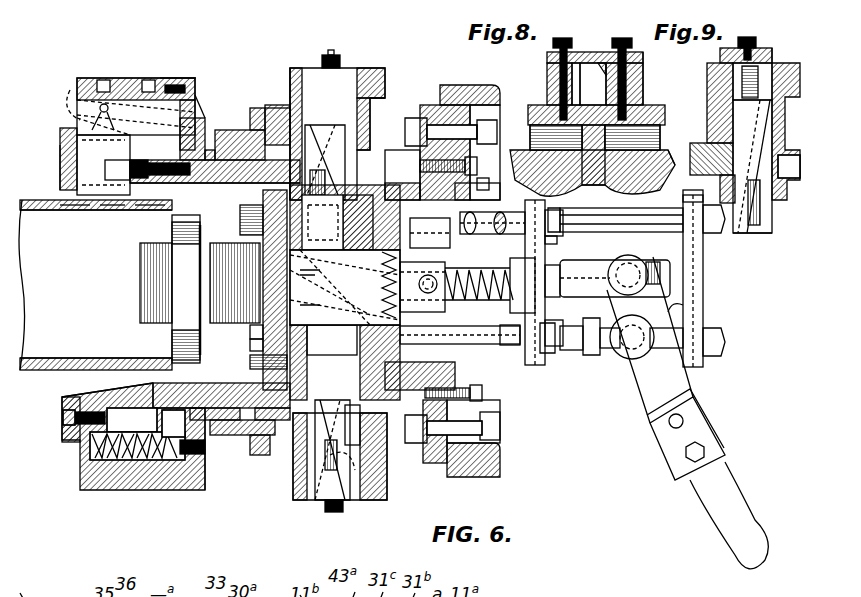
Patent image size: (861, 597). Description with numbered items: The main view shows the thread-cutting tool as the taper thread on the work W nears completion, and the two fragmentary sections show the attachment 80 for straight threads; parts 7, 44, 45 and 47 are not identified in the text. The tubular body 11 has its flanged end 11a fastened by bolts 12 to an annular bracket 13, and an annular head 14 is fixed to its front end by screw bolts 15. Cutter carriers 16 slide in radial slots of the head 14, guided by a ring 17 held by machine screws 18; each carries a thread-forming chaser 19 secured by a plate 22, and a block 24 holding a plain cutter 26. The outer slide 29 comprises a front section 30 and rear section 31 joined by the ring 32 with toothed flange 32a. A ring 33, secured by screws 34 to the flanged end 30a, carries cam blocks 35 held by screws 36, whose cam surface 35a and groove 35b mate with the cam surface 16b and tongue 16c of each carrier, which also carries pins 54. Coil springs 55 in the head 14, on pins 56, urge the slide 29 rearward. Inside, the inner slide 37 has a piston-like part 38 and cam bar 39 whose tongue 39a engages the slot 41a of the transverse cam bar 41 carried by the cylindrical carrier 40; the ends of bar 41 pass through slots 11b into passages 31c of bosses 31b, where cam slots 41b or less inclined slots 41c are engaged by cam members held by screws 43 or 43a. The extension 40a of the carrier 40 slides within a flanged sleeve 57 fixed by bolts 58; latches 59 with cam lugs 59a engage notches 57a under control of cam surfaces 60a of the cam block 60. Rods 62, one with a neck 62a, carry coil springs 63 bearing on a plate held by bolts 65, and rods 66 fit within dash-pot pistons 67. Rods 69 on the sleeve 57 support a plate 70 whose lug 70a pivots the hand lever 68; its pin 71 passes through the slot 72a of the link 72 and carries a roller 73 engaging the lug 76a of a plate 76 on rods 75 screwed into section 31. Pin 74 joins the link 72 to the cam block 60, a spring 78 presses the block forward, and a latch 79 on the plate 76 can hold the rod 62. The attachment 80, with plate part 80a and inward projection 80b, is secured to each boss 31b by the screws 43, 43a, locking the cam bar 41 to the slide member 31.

In FIG. 6, the workpiece W is at (28, 372).
In FIG. 6, the frame 7 is at (210, 492).
In FIG. 6, the tubular body 11 is at (415, 118).
In FIG. 8, the tubular body 11 is at (640, 188).
In FIG. 9, the tubular body 11 is at (725, 203).
In FIG. 6, the rear flanged end 11a is at (470, 88).
In FIG. 6, the slots 11b is at (400, 150).
In FIG. 8, the slots 11b is at (670, 160).
In FIG. 9, the slots 11b is at (780, 236).
In FIG. 6, the bolts 12 is at (485, 436).
In FIG. 6, the annular upstanding bracket 13 is at (482, 88).
In FIG. 6, the annular head 14 is at (200, 125).
In FIG. 6, the screw bolts 15 is at (225, 184).
In FIG. 6, the cutter carrier 16 is at (95, 130).
In FIG. 6, the cam surface 16b is at (80, 118).
In FIG. 6, the tongue 16c is at (78, 100).
In FIG. 6, the ring 17 is at (60, 150).
In FIG. 6, the machine screws 18 is at (64, 414).
In FIG. 6, the thread-forming chaser 19 is at (116, 212).
In FIG. 6, the plate 22 is at (152, 200).
In FIG. 6, the block 24 is at (80, 173).
In FIG. 6, the plain cutter 26 is at (85, 212).
In FIG. 6, the slide structure 29 is at (295, 68).
In FIG. 6, the front section 30 is at (230, 135).
In FIG. 6, the outwardly flanged front end 30a is at (200, 78).
In FIG. 6, the rear section 31 is at (278, 120).
In FIG. 8, the rear section 31 is at (528, 108).
In FIG. 9, the rear section 31 is at (710, 105).
In FIG. 6, the bosses 31b is at (380, 70).
In FIG. 8, the bosses 31b is at (548, 75).
In FIG. 9, the bosses 31b is at (710, 86).
In FIG. 6, the passages 31c is at (350, 68).
In FIG. 6, the ring 32 is at (252, 108).
In FIG. 6, the toothed flange 32a is at (262, 100).
In FIG. 6, the ring 33 is at (178, 78).
In FIG. 6, the machine screws 34 is at (200, 100).
In FIG. 6, the cam block 35 is at (100, 80).
In FIG. 6, the cam surface 35a is at (108, 100).
In FIG. 6, the cam groove 35b is at (150, 92).
In FIG. 6, the screws 36 is at (112, 82).
In FIG. 6, the inner slide structure 37 is at (250, 366).
In FIG. 6, the piston-like cylindrical part 38 is at (252, 184).
In FIG. 6, the cam bar 39 is at (470, 350).
In FIG. 6, the cam tongue 39a is at (322, 358).
In FIG. 6, the cylindrical block 40 is at (295, 440).
In FIG. 9, the cylindrical block 40 is at (773, 226).
In FIG. 6, the rearward extension 40a is at (372, 418).
In FIG. 6, the cam bar 41 is at (360, 490).
In FIG. 8, the cam bar 41 is at (532, 140).
In FIG. 9, the cam bar 41 is at (762, 235).
In FIG. 6, the slot 41a is at (320, 335).
In FIG. 6, the cam slots 41b is at (318, 125).
In FIG. 6, the cam slots 41c is at (372, 470).
In FIG. 8, the screws 43 is at (626, 30).
In FIG. 9, the screws 43 is at (752, 37).
In FIG. 6, the securing screws 43a is at (331, 50).
In FIG. 8, the securing screws 43a is at (560, 38).
In FIG. 6, the threaded sleeve 44 is at (258, 300).
In FIG. 6, the threaded sleeve 45 is at (140, 268).
In FIG. 6, the flange 47 is at (172, 342).
In FIG. 6, the pins 54 is at (60, 136).
In FIG. 6, the coil springs 55 is at (102, 492).
In FIG. 6, the pins 56 is at (130, 492).
In FIG. 6, the flanged sleeve 57 is at (482, 392).
In FIG. 6, the notches 57a is at (435, 169).
In FIG. 6, the bolts 58 is at (500, 420).
In FIG. 6, the latches 59 is at (420, 286).
In FIG. 6, the cam lugs 59a is at (421, 280).
In FIG. 6, the cam block 60 is at (250, 332).
In FIG. 6, the cam surfaces 60a is at (345, 255).
In FIG. 6, the rods 62 is at (250, 346).
In FIG. 6, the neck 62a is at (552, 352).
In FIG. 6, the coil springs 63 is at (255, 395).
In FIG. 6, the bolts 65 is at (477, 191).
In FIG. 6, the rods 66 is at (429, 235).
In FIG. 6, the pistons 67 is at (262, 212).
In FIG. 6, the manual lever 68 is at (725, 505).
In FIG. 6, the rods 69 is at (495, 168).
In FIG. 6, the plate 70 is at (703, 276).
In FIG. 6, the lug 70a is at (705, 308).
In FIG. 6, the pin 71 is at (632, 250).
In FIG. 6, the link 72 is at (590, 260).
In FIG. 6, the elongated slot 72a is at (660, 250).
In FIG. 6, the roller 73 is at (615, 220).
In FIG. 6, the pin 74 is at (462, 300).
In FIG. 6, the rods 75 is at (500, 214).
In FIG. 6, the plate 76 is at (525, 247).
In FIG. 6, the lug 76a is at (552, 244).
In FIG. 6, the coil spring 78 is at (505, 290).
In FIG. 6, the latch 79 is at (556, 308).
In FIG. 8, the attachment 80 is at (600, 52).
In FIG. 9, the attachment 80 is at (720, 52).
In FIG. 8, the plate part 80a is at (643, 63).
In FIG. 9, the plate part 80a is at (772, 58).
In FIG. 8, the inward projection 80b is at (643, 102).